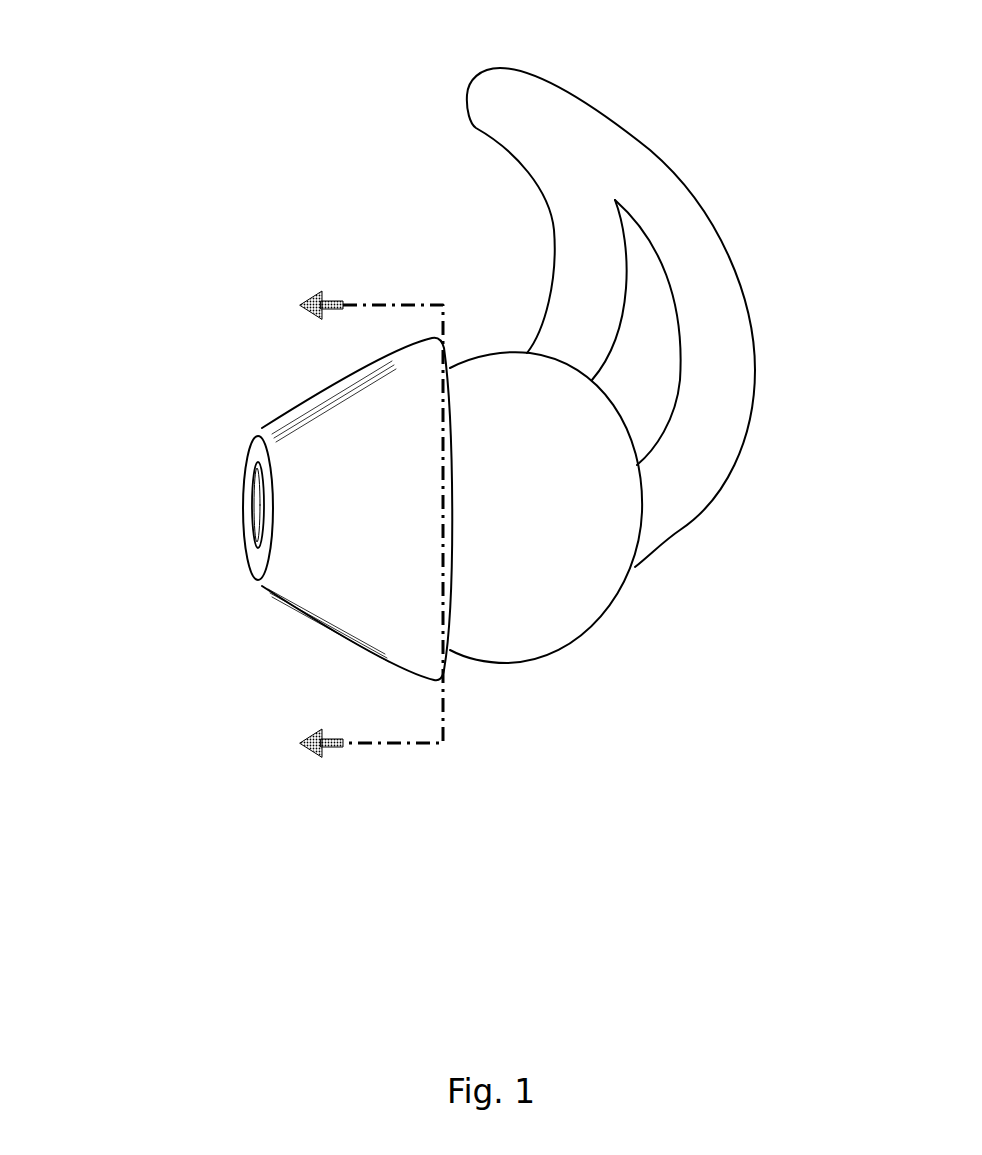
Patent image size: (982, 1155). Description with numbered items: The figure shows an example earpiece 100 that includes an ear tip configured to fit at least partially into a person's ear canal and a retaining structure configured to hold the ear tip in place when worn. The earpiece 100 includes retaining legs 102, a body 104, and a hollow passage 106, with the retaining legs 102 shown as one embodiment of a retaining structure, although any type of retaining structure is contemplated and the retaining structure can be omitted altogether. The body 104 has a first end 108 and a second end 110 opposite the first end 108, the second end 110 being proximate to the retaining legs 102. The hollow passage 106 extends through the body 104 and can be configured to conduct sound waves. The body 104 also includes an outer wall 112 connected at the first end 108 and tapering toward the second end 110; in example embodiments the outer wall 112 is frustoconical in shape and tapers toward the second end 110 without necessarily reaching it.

The earpiece 100 is at (283, 50).
The retaining legs 102 is at (588, 367).
The body 104 is at (580, 656).
The hollow passage 106 is at (238, 506).
The first end 108 is at (249, 461).
The second end 110 is at (650, 577).
The outer wall 112 is at (363, 522).